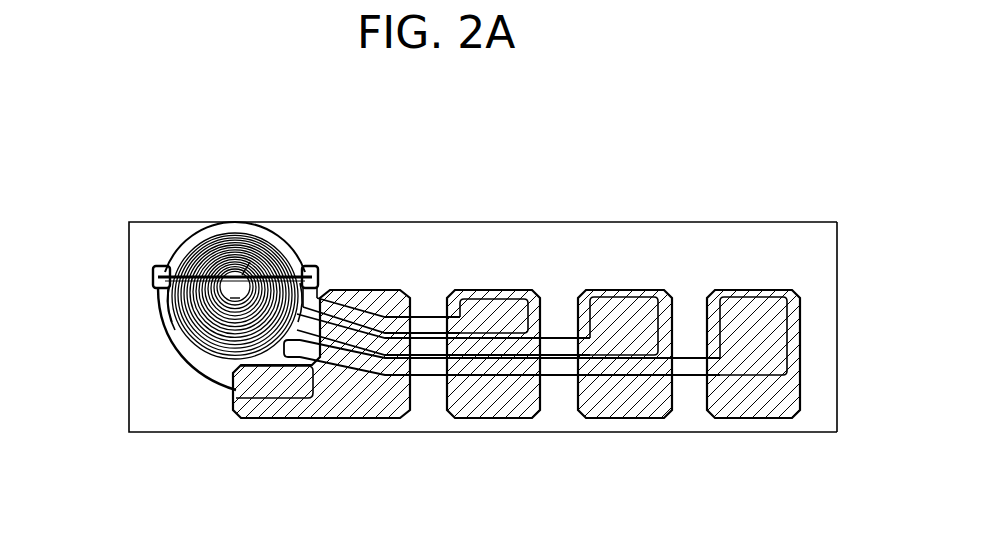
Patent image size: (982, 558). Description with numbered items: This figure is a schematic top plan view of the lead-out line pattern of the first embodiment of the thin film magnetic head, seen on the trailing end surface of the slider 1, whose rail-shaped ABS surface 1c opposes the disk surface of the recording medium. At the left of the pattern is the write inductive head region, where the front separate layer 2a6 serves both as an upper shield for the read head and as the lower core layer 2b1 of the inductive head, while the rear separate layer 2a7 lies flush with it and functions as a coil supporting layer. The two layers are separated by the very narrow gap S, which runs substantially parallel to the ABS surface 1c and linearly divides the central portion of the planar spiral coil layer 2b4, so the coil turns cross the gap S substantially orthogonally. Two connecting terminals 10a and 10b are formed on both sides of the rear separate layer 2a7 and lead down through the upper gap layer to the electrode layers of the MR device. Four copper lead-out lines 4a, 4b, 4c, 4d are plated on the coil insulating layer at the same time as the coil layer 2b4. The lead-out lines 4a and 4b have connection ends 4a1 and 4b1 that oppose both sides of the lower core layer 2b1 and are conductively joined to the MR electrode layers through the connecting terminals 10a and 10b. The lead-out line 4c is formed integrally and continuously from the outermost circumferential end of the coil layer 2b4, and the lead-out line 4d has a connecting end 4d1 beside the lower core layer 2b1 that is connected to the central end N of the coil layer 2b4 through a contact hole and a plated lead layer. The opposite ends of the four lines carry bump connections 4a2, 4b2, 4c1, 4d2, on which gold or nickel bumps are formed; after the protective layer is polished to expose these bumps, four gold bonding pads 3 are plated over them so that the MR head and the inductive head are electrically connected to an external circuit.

The slider 1 is at (715, 164).
The ABS surface 1c is at (797, 221).
The front separate layer 2a6 is at (170, 238).
The lower core layer 2b1 is at (170, 238).
The rear separate layer 2a7 is at (177, 322).
The coil layer 2b4 is at (239, 232).
The bonding pad 3 is at (370, 398).
The lead-out line 4a is at (183, 358).
The connection end 4a1 is at (158, 290).
The bump connection 4a2 is at (290, 398).
The lead-out line 4b is at (427, 324).
The connection end 4b1 is at (310, 266).
The bump connection 4b2 is at (498, 296).
The lead-out line 4c is at (555, 348).
The bump connection 4c1 is at (638, 297).
The lead-out line 4d is at (687, 367).
The connecting end 4d1 is at (285, 358).
The bump connection 4d2 is at (765, 297).
The connecting terminal 10a is at (153, 273).
The connecting terminal 10b is at (322, 268).
The gap S is at (242, 275).
The central end N is at (236, 300).